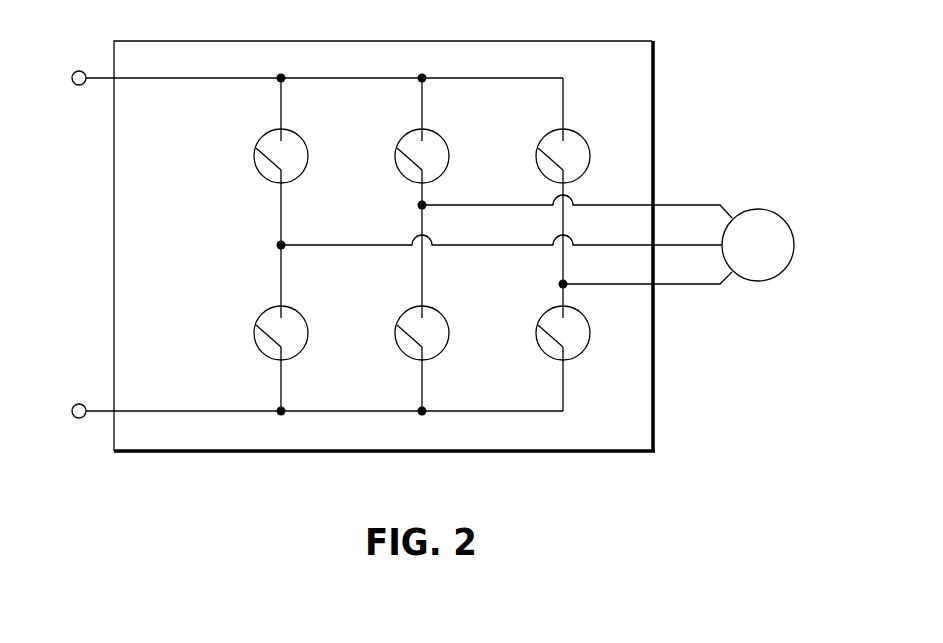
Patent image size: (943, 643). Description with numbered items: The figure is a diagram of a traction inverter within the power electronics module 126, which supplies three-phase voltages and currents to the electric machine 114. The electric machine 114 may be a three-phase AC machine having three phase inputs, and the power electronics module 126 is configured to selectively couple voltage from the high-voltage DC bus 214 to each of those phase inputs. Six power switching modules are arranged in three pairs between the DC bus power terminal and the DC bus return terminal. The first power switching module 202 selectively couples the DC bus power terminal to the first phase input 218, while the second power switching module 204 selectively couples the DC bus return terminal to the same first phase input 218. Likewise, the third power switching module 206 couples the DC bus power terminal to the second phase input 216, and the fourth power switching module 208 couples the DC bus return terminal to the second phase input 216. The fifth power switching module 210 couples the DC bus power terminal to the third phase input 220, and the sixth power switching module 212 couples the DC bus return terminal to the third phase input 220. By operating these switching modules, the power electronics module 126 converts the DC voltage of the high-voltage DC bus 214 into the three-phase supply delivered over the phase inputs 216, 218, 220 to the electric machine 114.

The power electronics module 126 is at (575, 41).
The high-voltage DC bus 214 is at (62, 66).
The first power switching module 202 is at (264, 135).
The second power switching module 204 is at (263, 312).
The third power switching module 206 is at (405, 135).
The fourth power switching module 208 is at (404, 312).
The fifth power switching module 210 is at (546, 135).
The sixth power switching module 212 is at (545, 312).
The second phase input 216 is at (661, 204).
The first phase input 218 is at (680, 245).
The third phase input 220 is at (686, 284).
The electric machine 114 is at (765, 210).